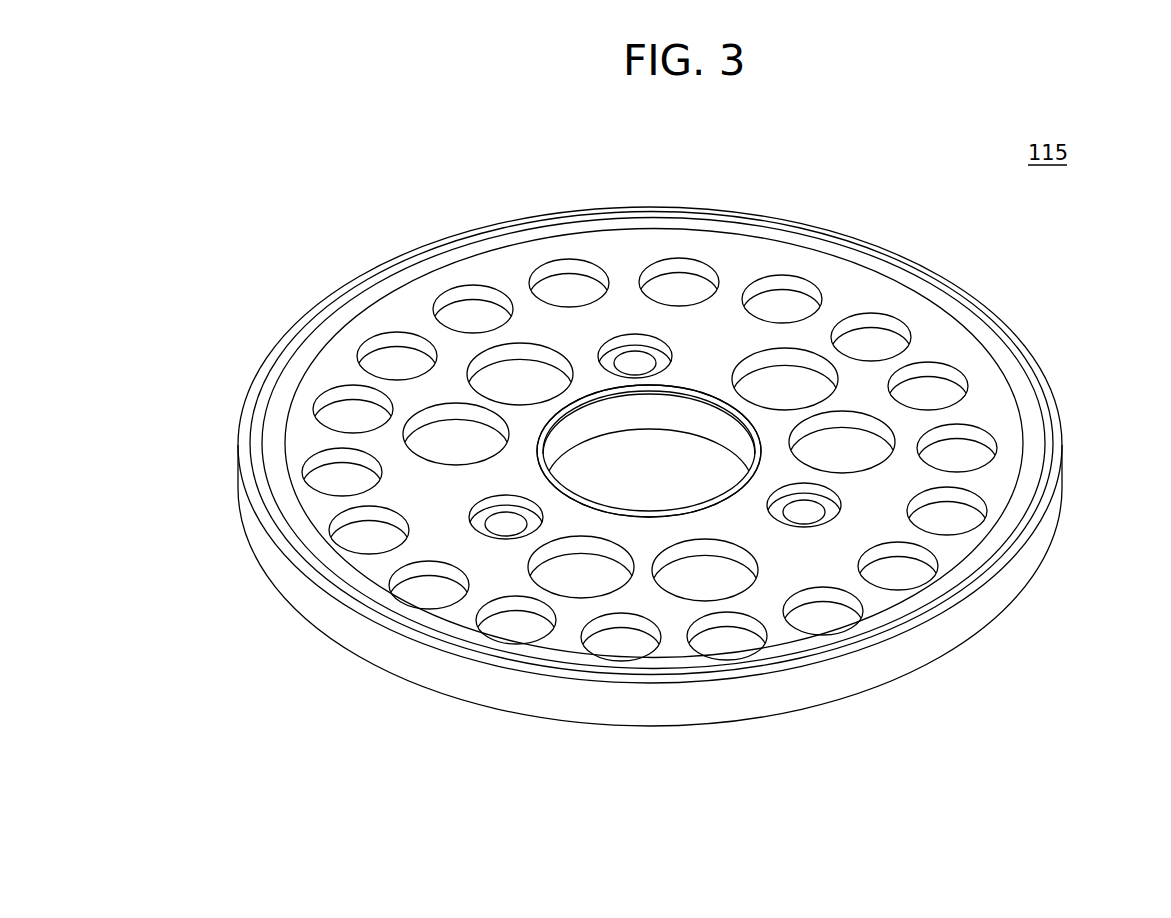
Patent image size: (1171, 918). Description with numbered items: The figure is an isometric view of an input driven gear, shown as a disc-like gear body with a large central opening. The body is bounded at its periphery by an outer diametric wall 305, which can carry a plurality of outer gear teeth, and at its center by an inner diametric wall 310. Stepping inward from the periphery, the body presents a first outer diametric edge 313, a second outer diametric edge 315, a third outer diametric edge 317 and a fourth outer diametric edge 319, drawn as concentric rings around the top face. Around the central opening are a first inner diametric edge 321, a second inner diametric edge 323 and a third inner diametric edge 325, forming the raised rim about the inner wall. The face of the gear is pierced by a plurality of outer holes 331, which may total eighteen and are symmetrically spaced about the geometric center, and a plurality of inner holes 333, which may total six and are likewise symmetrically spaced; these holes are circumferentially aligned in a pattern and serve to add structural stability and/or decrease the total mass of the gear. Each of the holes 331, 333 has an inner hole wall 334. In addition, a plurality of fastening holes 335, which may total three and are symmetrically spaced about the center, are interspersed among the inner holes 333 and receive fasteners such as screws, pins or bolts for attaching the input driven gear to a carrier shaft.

The outer diametric wall 305 is at (990, 607).
The inner diametric wall 310 is at (687, 420).
The first outer diametric edge 313 is at (893, 255).
The second outer diametric edge 315 is at (827, 235).
The third outer diametric edge 317 is at (758, 227).
The fourth outer diametric edge 319 is at (693, 228).
The first inner diametric edge 321 is at (540, 459).
The second inner diametric edge 323 is at (550, 428).
The third inner diametric edge 325 is at (598, 407).
The outer holes 331 is at (993, 455).
The inner holes 333 is at (840, 375).
The inner hole wall 334 is at (940, 497).
The fastening holes 335 is at (627, 323).